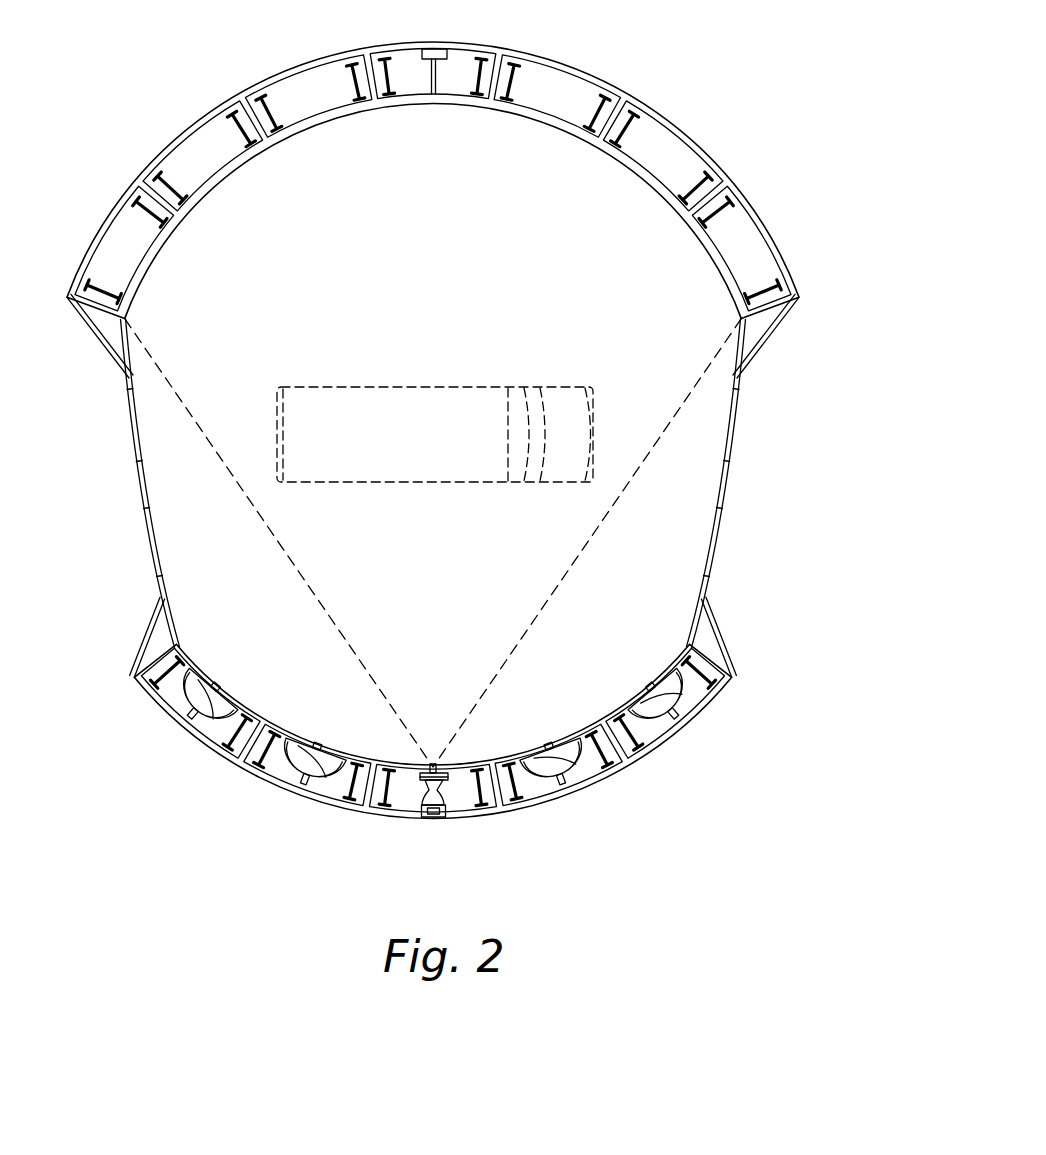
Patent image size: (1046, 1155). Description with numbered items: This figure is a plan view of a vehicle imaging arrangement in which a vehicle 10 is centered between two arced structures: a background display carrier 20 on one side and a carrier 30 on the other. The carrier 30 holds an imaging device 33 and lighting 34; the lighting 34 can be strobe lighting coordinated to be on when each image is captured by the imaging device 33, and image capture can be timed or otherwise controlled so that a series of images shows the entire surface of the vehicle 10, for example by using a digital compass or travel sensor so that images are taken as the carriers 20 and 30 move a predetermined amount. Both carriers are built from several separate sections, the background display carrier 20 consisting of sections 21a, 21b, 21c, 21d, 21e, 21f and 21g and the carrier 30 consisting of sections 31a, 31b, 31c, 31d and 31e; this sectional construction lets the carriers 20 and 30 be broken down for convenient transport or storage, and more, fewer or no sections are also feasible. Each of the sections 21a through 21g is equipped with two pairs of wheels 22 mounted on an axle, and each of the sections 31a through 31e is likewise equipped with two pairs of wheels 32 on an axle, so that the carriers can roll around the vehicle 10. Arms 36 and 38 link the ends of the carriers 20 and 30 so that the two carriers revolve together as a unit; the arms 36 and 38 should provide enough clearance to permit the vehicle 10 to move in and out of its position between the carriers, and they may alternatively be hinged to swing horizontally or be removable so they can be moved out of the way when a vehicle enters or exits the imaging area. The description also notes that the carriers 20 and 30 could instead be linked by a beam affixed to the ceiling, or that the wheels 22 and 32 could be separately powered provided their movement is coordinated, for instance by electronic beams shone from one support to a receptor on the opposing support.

The vehicle 10 is at (427, 385).
The background display carrier 20 is at (693, 135).
The section 21a is at (137, 282).
The section 21b is at (215, 185).
The section 21c is at (320, 120).
The section 21d is at (420, 102).
The section 21e is at (554, 111).
The section 21f is at (657, 185).
The section 21g is at (728, 282).
The wheels 22 is at (595, 108).
The carrier 30 is at (547, 804).
The section 31a is at (170, 720).
The section 31b is at (285, 795).
The section 31c is at (410, 823).
The section 31d is at (581, 795).
The section 31e is at (696, 720).
The wheels 32 is at (333, 797).
The imaging device 33 is at (433, 762).
The lighting 34 is at (661, 690).
The arm 36 is at (725, 480).
The arm 38 is at (142, 482).